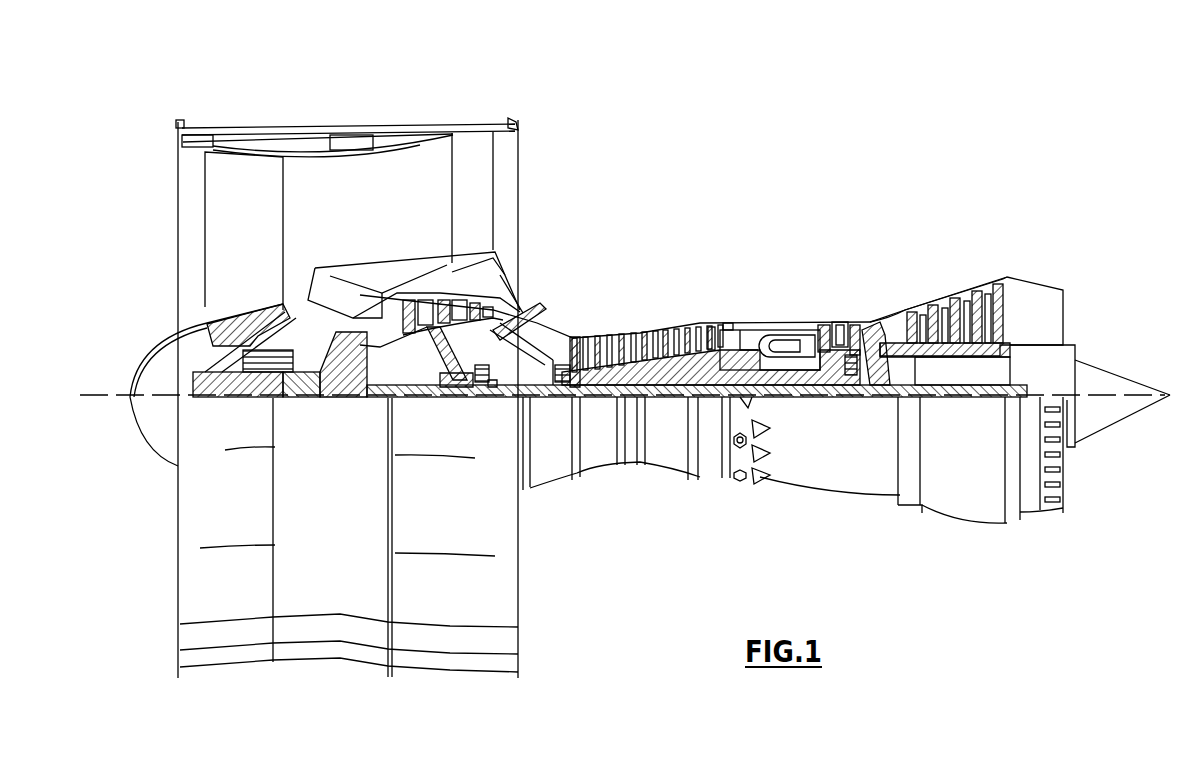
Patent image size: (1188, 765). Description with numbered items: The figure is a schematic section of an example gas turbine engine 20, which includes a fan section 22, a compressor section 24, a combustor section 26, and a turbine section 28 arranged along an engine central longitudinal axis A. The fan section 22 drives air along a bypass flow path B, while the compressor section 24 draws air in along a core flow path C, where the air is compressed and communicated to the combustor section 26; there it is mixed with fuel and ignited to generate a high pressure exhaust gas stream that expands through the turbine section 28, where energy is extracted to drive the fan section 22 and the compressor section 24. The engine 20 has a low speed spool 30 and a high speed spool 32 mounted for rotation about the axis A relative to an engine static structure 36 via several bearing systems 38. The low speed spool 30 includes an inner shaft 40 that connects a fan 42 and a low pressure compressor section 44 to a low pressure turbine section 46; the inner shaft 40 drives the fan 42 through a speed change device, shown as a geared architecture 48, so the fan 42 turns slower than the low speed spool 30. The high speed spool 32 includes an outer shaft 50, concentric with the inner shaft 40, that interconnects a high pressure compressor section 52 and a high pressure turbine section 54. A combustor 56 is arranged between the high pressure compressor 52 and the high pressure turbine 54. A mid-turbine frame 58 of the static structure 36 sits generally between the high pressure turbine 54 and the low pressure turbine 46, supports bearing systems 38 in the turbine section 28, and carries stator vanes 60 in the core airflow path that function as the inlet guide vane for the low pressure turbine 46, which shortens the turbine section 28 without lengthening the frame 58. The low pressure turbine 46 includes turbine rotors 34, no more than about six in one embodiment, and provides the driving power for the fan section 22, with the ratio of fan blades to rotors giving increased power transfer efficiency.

The gas turbine engine 20 is at (787, 177).
The fan section 22 is at (285, 118).
The compressor section 24 is at (711, 320).
The combustor section 26 is at (798, 305).
The turbine section 28 is at (960, 293).
The low speed spool 30 is at (668, 402).
The high speed spool 32 is at (711, 345).
The turbine rotors 34 is at (1002, 352).
The engine static structure 36 is at (706, 486).
The bearing systems 38 is at (283, 390).
The inner shaft 40 is at (533, 398).
The fan 42 is at (258, 251).
The low pressure compressor section 44 is at (460, 302).
The low pressure turbine section 46 is at (958, 300).
The geared architecture 48 is at (353, 382).
The outer shaft 50 is at (790, 397).
The high pressure compressor section 52 is at (655, 338).
The high pressure turbine section 54 is at (839, 330).
The combustor 56 is at (780, 345).
The mid-turbine frame 58 is at (880, 304).
The stator vanes 60 is at (905, 355).
The engine central longitudinal axis A is at (1152, 393).
The bypass flow path B is at (395, 204).
The core flow path C is at (348, 296).